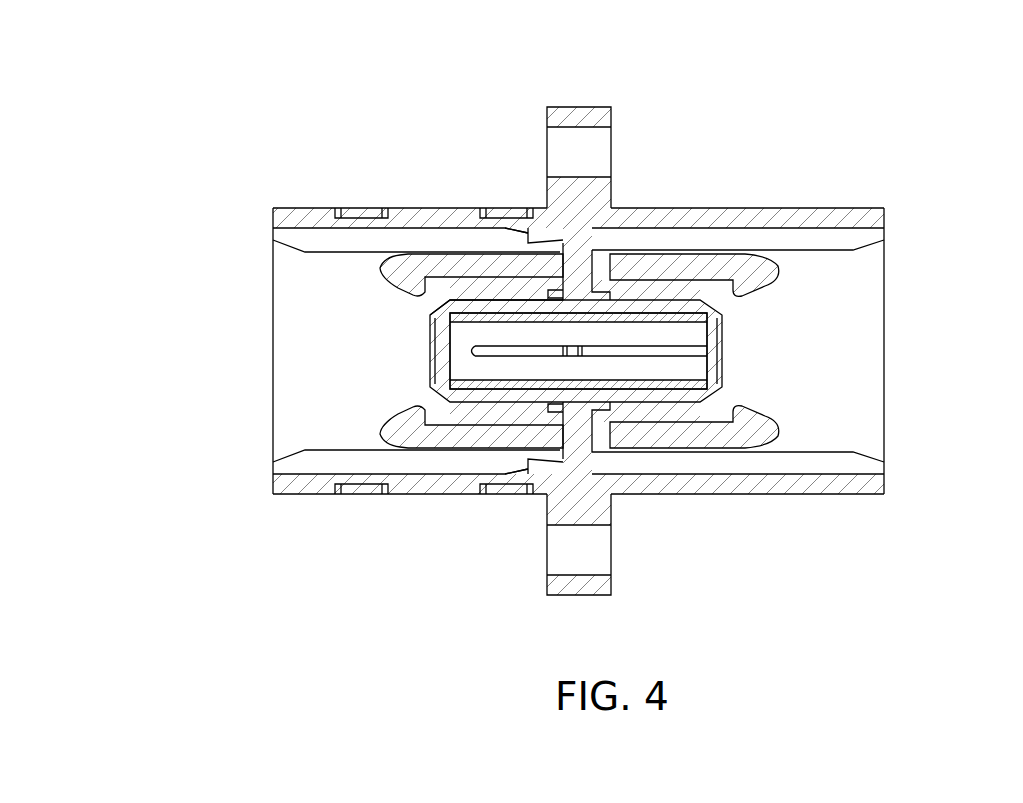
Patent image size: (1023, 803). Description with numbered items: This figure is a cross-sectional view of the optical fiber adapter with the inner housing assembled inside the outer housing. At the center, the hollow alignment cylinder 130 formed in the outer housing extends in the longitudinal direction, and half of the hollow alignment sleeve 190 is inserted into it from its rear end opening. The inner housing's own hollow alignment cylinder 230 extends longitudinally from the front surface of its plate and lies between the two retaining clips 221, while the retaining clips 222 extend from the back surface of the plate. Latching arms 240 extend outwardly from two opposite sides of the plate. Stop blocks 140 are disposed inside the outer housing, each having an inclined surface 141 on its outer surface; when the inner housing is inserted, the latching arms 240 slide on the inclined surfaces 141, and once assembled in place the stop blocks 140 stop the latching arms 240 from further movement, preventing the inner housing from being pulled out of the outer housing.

The alignment cylinder 130 is at (665, 305).
The stop block 140 is at (522, 228).
The inclined surface 141 is at (518, 231).
The alignment sleeve 190 is at (672, 383).
The retaining clips 221 is at (388, 270).
The retaining clips 222 is at (760, 270).
The alignment cylinder 230 is at (462, 300).
The latching arms 240 is at (555, 238).